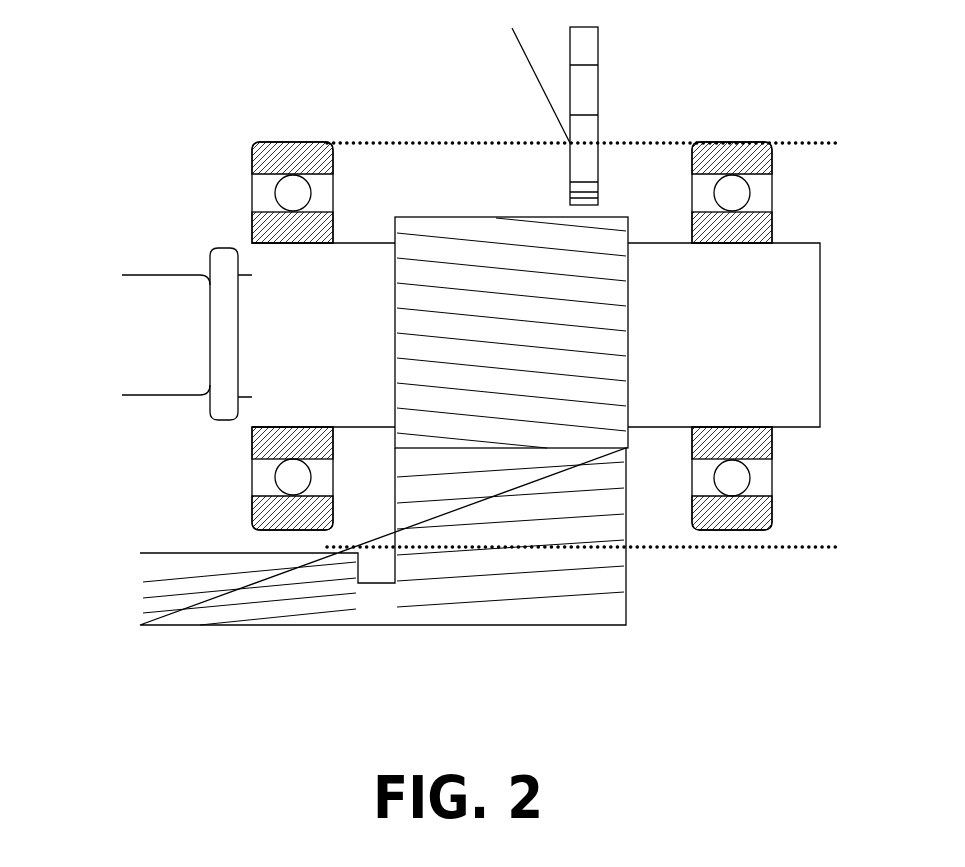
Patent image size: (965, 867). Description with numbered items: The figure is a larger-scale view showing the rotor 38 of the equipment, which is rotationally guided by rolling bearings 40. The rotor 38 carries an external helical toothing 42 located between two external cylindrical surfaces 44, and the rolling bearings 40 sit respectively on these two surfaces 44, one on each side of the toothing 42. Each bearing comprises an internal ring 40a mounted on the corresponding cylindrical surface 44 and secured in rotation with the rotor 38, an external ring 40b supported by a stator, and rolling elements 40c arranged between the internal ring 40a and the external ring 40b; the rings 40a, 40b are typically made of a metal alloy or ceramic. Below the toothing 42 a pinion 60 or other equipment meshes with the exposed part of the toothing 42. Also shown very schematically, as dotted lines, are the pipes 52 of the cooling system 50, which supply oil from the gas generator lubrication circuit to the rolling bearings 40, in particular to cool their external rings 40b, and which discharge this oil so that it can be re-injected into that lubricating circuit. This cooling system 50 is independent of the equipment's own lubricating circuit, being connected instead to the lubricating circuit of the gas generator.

The rotor 38 is at (148, 365).
The rolling bearings 40 is at (295, 160).
The internal rings 40a is at (767, 233).
The external rings 40b is at (760, 140).
The rolling elements 40c is at (735, 197).
The external helical toothing 42 is at (470, 215).
The external cylindrical surfaces 44 is at (287, 300).
The cooling system 50 is at (799, 580).
The pipes 52 is at (358, 143).
The pinion 60 is at (573, 612).